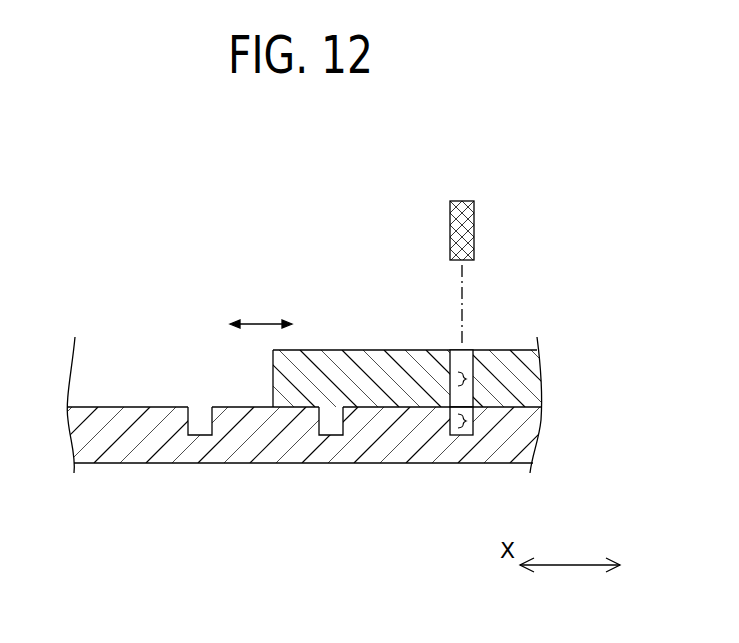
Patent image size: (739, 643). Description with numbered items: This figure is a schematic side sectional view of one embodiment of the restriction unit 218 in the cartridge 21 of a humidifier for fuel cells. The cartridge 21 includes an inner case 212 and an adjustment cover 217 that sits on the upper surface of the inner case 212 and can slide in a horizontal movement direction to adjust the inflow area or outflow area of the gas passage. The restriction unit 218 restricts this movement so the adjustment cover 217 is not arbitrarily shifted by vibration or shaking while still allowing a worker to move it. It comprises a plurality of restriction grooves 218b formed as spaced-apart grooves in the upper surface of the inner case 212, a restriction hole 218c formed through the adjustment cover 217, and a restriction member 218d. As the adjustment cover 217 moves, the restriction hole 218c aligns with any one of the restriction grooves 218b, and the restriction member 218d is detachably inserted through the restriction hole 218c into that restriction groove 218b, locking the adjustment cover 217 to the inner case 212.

The cartridge 21 is at (57, 222).
The inner case 212 is at (247, 445).
The adjustment cover 217 is at (374, 364).
The restriction unit 218 is at (581, 308).
The restriction grooves 218b is at (465, 420).
The restriction hole 218c is at (465, 378).
The restriction member 218d is at (551, 261).